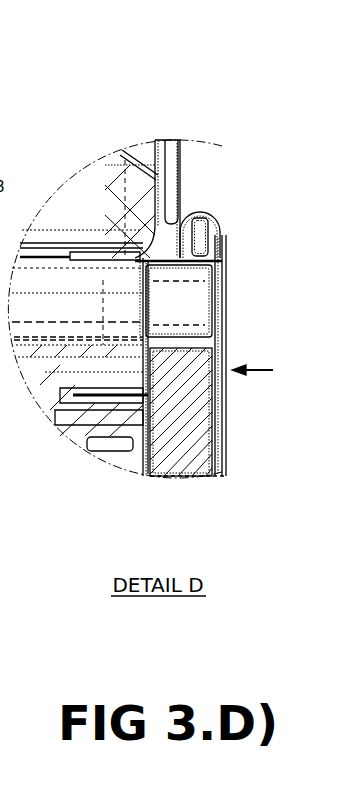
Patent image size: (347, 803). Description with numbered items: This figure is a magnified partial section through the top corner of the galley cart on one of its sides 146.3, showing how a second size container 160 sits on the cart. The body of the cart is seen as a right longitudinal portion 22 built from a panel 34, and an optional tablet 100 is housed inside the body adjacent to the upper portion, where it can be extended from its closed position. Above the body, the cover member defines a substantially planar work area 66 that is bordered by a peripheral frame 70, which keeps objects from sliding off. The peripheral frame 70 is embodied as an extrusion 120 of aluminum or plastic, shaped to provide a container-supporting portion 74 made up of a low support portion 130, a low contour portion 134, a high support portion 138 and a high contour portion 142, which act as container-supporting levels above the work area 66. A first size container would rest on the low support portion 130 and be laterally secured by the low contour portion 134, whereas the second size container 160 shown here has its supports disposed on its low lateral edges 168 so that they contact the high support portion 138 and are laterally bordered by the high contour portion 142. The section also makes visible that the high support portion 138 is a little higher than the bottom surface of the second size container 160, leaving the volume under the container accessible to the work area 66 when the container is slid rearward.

The right longitudinal portion 22 is at (223, 355).
The panel 34 is at (197, 450).
The work area 66 is at (88, 340).
The peripheral frame 70 is at (217, 210).
The container-supporting portion 74 is at (246, 219).
The tablet 100 is at (58, 373).
The extrusion 120 is at (220, 328).
The low support portion 130 is at (98, 337).
The low contour portion 134 is at (143, 243).
The high support portion 138 is at (205, 254).
The high contour portion 142 is at (190, 230).
The side 146.3 is at (220, 460).
The second size container 160 is at (157, 140).
The low lateral edge 168 is at (122, 228).